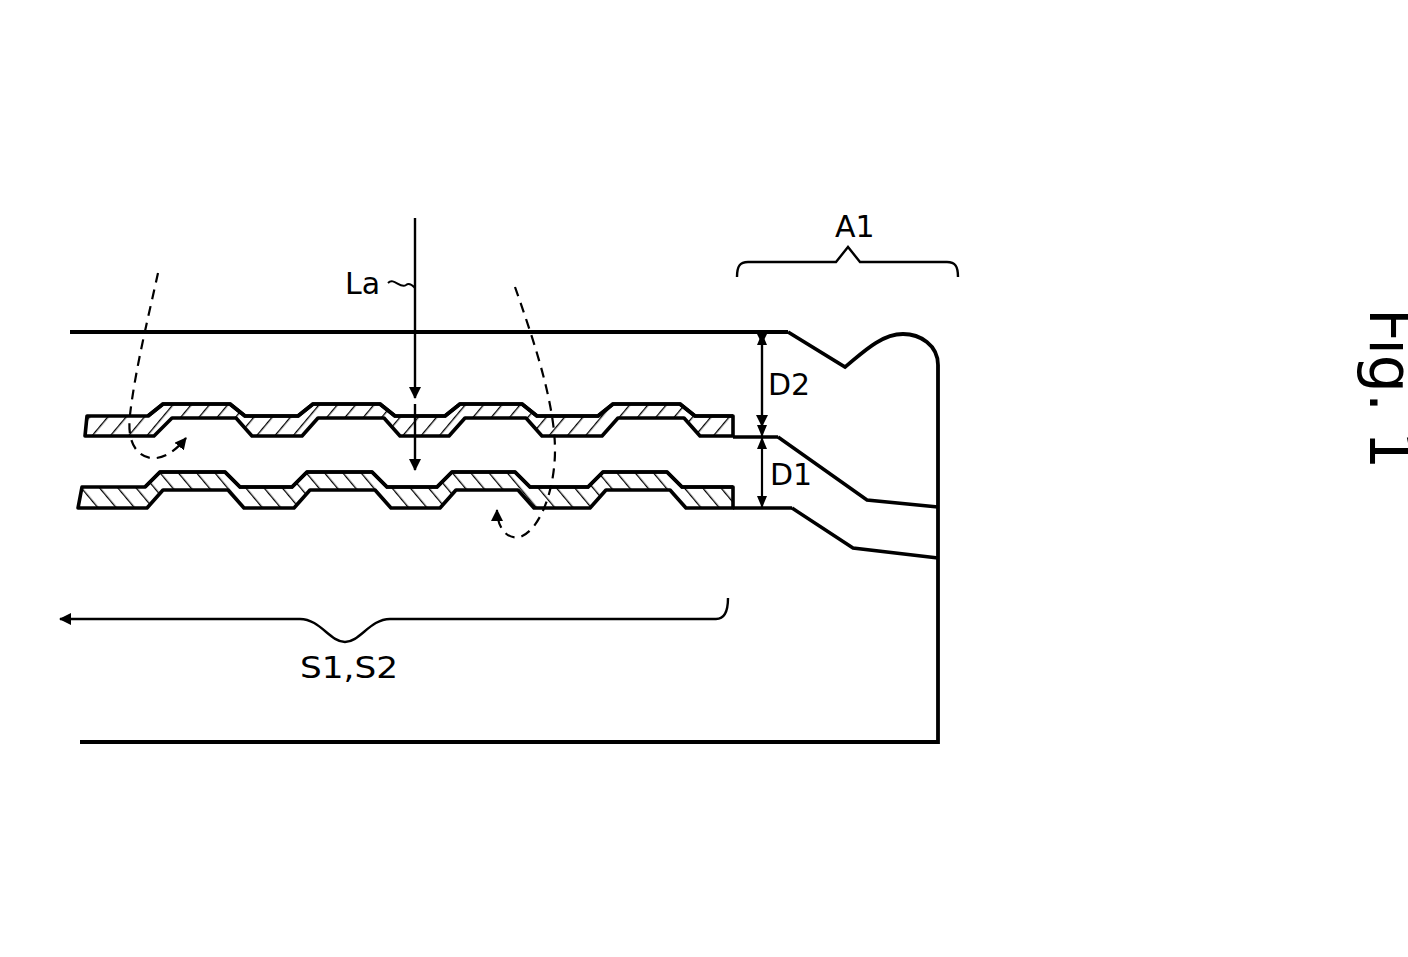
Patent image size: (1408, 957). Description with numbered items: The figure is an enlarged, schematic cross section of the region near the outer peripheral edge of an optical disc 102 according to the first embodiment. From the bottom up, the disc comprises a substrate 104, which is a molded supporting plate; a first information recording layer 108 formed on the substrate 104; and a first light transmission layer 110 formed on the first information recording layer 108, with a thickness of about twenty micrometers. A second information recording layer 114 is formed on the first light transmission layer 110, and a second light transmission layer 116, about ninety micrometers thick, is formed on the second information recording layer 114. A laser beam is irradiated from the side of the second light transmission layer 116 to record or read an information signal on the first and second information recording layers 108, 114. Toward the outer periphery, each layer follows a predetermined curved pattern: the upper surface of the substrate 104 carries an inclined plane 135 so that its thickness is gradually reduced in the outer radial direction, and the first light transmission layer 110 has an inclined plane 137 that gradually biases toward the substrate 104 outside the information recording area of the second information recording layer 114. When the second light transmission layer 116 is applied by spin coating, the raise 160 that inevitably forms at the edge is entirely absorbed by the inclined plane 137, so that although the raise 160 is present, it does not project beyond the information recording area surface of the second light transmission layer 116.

The optical disc 102 is at (1016, 156).
The substrate 104 is at (905, 652).
The first information recording layer 108 is at (492, 464).
The first light transmission layer 110 is at (920, 527).
The second information recording layer 114 is at (200, 398).
The second light transmission layer 116 is at (912, 458).
The inclined plane 135 is at (845, 535).
The inclined plane 137 is at (836, 470).
The raise 160 is at (913, 368).